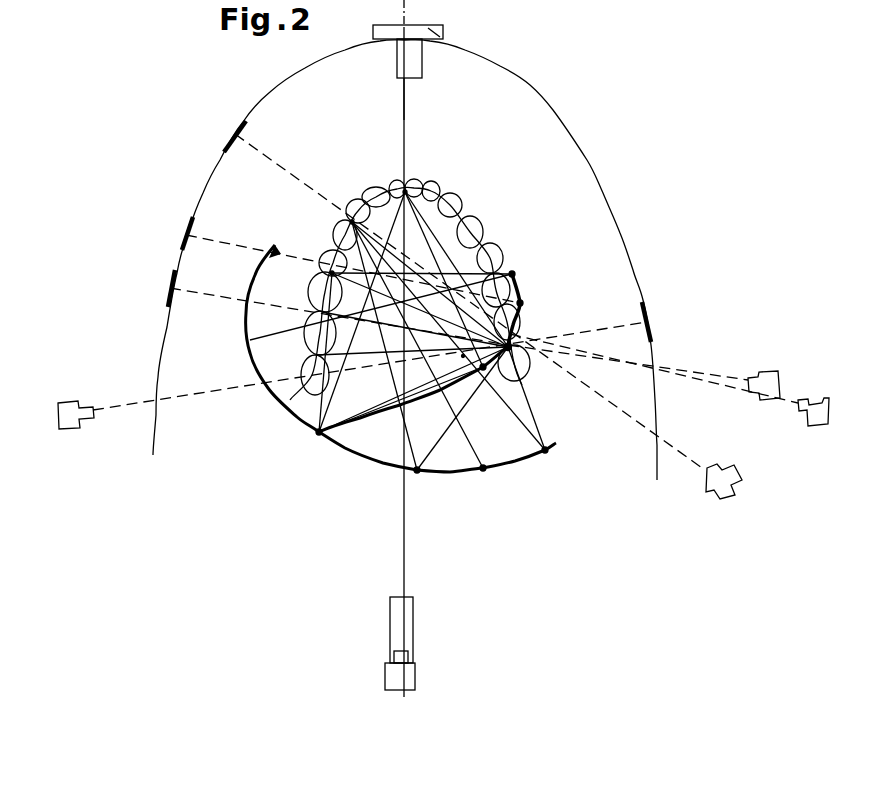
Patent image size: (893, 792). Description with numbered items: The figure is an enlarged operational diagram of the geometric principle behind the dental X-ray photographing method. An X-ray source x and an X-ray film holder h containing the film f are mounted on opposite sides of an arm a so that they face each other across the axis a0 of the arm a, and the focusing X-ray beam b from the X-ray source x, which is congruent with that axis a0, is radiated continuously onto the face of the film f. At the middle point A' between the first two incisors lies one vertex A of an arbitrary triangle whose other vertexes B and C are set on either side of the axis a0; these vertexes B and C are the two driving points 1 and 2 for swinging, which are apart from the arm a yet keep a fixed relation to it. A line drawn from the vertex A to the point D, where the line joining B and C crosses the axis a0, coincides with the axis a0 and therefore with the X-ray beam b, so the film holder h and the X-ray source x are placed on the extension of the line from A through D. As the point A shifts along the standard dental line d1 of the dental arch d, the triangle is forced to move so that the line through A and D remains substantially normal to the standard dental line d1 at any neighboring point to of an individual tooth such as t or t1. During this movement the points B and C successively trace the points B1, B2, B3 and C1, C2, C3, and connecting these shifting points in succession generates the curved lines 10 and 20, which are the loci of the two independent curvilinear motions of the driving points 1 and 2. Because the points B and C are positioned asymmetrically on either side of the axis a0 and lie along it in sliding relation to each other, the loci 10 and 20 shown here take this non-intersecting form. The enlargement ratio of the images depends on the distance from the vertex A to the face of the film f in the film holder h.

The driving point for swinging 1 is at (316, 436).
The driving point for swinging 2 is at (515, 372).
The curvilinear motion 10 is at (356, 462).
The curvilinear motion 20 is at (522, 284).
The film f is at (383, 44).
The X-ray film holder h is at (440, 29).
The X-ray source x is at (728, 496).
The arm a is at (407, 634).
The X-ray beam b is at (406, 585).
The axis of the arm a0 is at (406, 548).
The tooth t is at (462, 212).
The tooth t1 is at (383, 180).
The dental arch d is at (290, 400).
The standard dental line d1 is at (279, 374).
The point D is at (342, 419).
The vertex B is at (311, 417).
The shifting point B1 is at (427, 488).
The shifting point B2 is at (493, 487).
The shifting point B3 is at (555, 467).
The vertex C is at (463, 356).
The shifting point C1 is at (537, 332).
The shifting point C2 is at (542, 300).
The shifting point C3 is at (530, 265).
The vertex A is at (425, 174).
The median point A' is at (436, 225).
The neighboring point of a tooth to is at (407, 190).